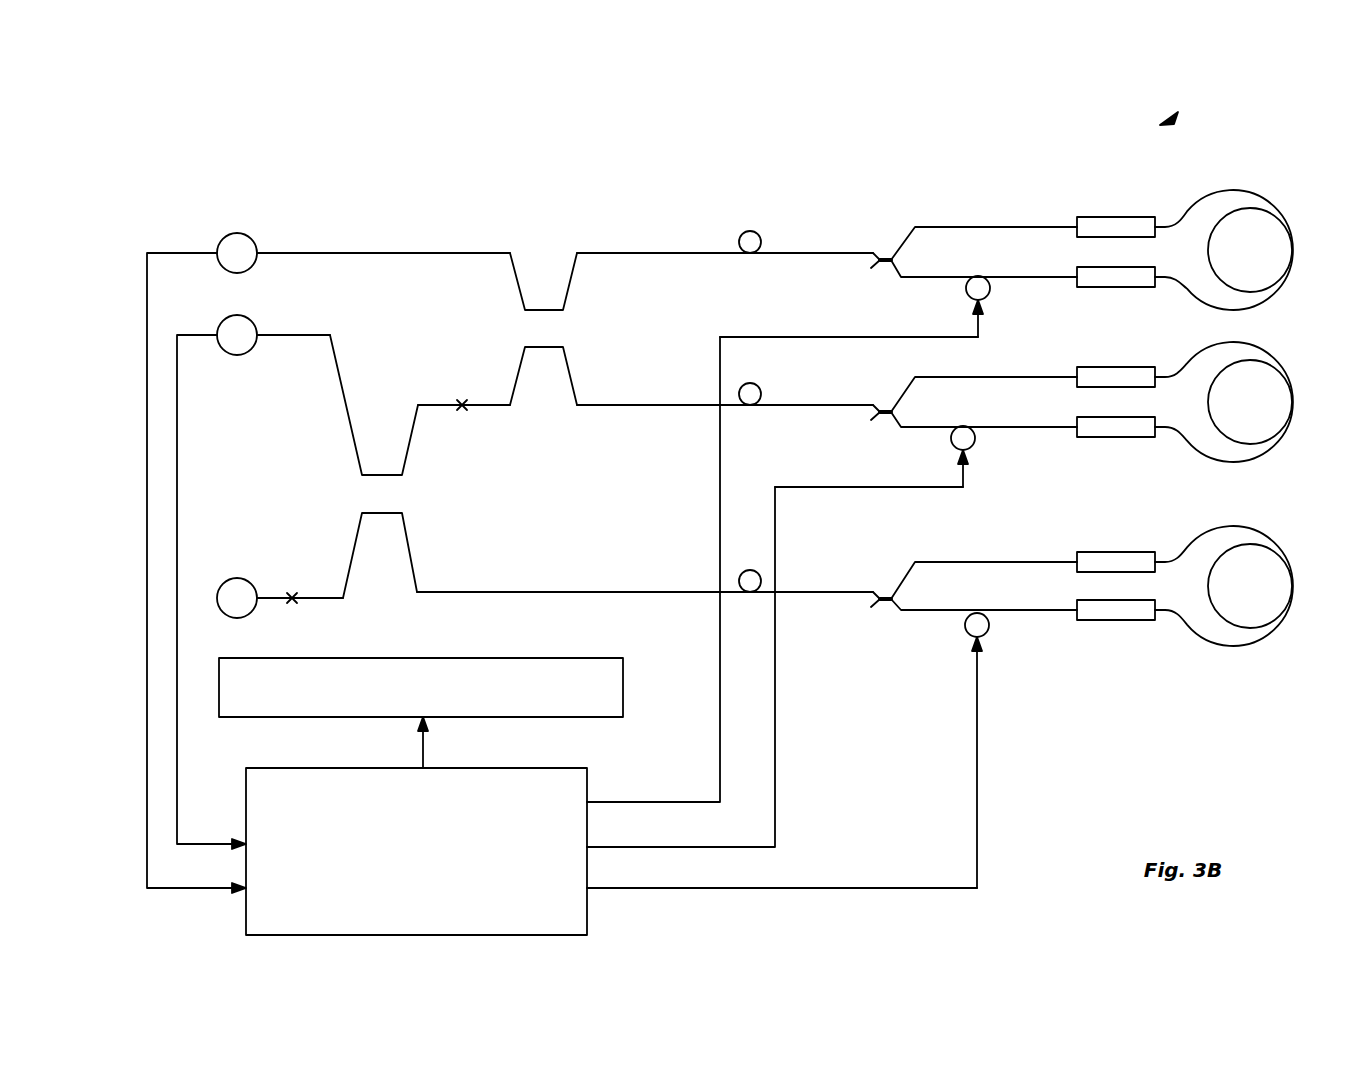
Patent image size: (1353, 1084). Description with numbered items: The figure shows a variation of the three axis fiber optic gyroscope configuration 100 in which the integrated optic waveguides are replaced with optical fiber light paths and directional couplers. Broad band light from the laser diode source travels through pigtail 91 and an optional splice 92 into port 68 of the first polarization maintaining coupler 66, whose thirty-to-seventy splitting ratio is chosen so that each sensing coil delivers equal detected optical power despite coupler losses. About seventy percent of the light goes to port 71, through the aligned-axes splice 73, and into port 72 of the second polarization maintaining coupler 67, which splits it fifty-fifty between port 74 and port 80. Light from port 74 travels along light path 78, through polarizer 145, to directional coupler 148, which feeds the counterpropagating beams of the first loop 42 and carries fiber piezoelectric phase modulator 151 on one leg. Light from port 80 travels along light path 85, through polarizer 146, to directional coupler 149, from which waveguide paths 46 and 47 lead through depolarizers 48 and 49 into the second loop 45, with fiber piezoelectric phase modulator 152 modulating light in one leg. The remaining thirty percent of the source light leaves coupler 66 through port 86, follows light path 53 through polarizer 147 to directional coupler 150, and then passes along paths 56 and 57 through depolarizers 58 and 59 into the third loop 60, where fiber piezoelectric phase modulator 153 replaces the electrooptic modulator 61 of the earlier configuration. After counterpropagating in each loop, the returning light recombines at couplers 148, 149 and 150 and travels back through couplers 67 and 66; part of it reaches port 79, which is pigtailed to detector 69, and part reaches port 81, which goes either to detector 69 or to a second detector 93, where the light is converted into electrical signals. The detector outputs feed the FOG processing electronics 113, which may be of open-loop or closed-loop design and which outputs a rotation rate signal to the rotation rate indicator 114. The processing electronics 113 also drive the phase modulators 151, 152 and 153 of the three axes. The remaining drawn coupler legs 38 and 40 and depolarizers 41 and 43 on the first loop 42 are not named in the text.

The configuration 100 is at (1172, 120).
The detector 69 is at (237, 233).
The second detector 93 is at (237, 355).
The modulator 61 is at (237, 578).
The second PM fiber optic coupler 67 is at (525, 326).
The port 79 is at (513, 255).
The port 80 is at (575, 253).
The port 81 is at (335, 340).
The first PM fiber optic coupler 66 is at (368, 490).
The port 71 is at (418, 405).
The splice 73 is at (462, 398).
The port 72 is at (520, 392).
The port 74 is at (571, 395).
The waveguide 85 is at (700, 253).
The waveguide 78 is at (698, 408).
The pigtail 91 is at (268, 604).
The splice 92 is at (292, 604).
The port 68 is at (355, 555).
The port 86 is at (420, 590).
The waveguide 53 is at (703, 594).
The polarizer 146 is at (751, 231).
The polarizer 145 is at (750, 383).
The polarizer 147 is at (750, 570).
The directional coupler 149 is at (880, 266).
The directional coupler 148 is at (880, 418).
The directional coupler 150 is at (878, 606).
The waveguide 46 is at (902, 246).
The waveguide 47 is at (899, 278).
The coupler output leg 38 is at (900, 398).
The coupler output leg 40 is at (896, 426).
The waveguide 56 is at (898, 586).
The waveguide 57 is at (891, 613).
The depolarizer 48 is at (1126, 217).
The depolarizer 49 is at (1120, 268).
The phase modulator 41 is at (1136, 367).
The phase modulator 43 is at (1128, 418).
The depolarizer 58 is at (1140, 552).
The depolarizer 59 is at (1120, 601).
The loop 45 is at (1293, 252).
The loop 42 is at (1293, 404).
The loop 60 is at (1293, 588).
The optical fiber piezoelectric phase modulator 152 is at (990, 290).
The optical fiber piezoelectric phase modulator 151 is at (975, 440).
The optical fiber piezoelectric phase modulator 153 is at (990, 627).
The indicator 114 is at (505, 658).
The FOG processing electronics 113 is at (325, 768).